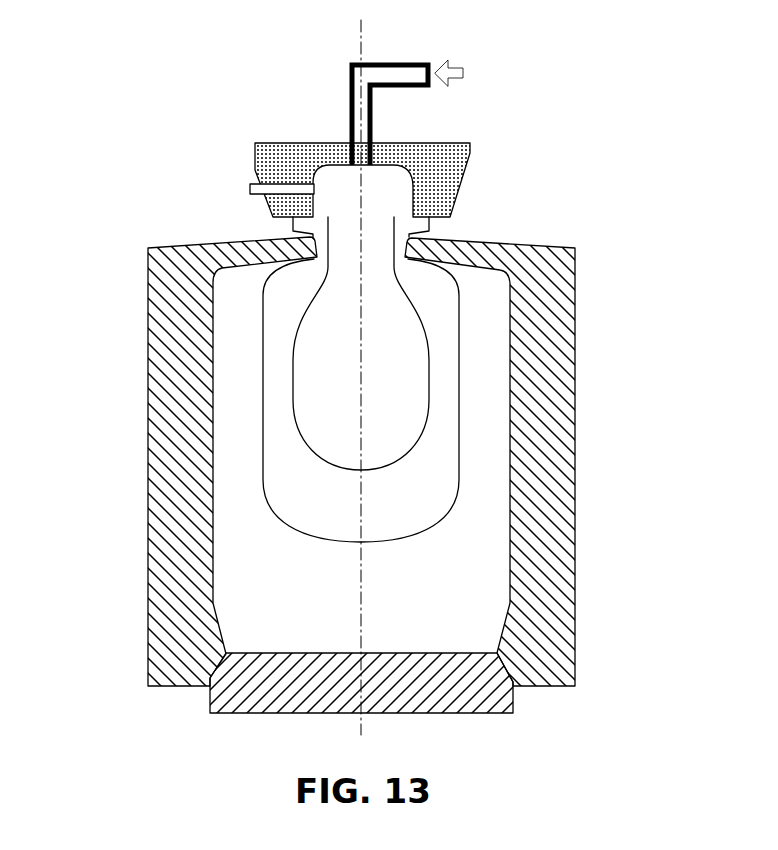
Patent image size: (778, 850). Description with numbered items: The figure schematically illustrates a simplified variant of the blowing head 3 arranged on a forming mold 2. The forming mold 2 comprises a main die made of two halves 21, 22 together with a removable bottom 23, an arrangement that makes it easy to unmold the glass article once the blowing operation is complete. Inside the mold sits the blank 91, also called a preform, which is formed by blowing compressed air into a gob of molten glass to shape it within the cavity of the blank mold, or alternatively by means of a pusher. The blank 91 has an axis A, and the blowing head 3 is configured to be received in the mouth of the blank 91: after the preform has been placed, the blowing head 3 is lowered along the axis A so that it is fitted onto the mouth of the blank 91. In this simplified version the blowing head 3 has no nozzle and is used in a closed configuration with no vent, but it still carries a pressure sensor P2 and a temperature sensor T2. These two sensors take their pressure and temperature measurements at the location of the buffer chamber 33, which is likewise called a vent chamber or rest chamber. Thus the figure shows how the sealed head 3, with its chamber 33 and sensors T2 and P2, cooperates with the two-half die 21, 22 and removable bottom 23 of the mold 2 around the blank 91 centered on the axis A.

The forming mold 2 is at (120, 320).
The die half 21 is at (180, 463).
The die half 22 is at (556, 370).
The removable bottom 23 is at (279, 676).
The blowing head 3 is at (570, 153).
The buffer chamber 33 is at (348, 192).
The temperature sensor T2 is at (328, 187).
The pressure sensor P2 is at (250, 189).
The blank 91 is at (413, 512).
The axis A is at (374, 377).